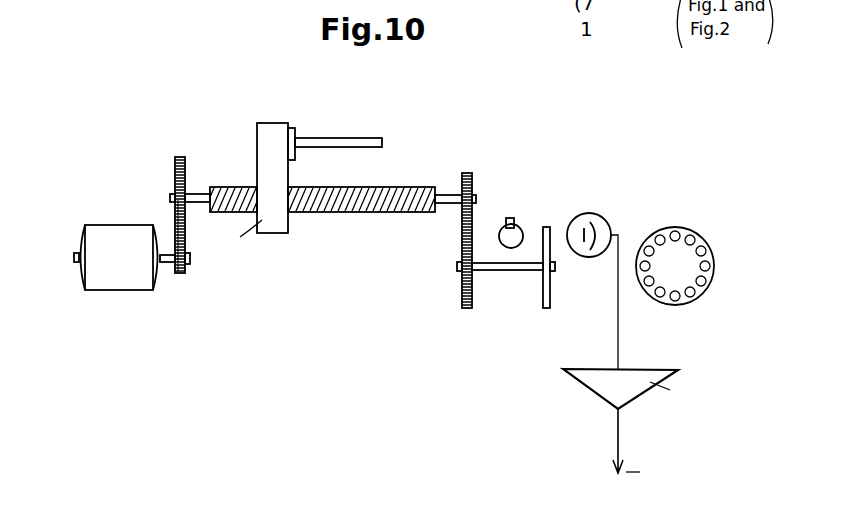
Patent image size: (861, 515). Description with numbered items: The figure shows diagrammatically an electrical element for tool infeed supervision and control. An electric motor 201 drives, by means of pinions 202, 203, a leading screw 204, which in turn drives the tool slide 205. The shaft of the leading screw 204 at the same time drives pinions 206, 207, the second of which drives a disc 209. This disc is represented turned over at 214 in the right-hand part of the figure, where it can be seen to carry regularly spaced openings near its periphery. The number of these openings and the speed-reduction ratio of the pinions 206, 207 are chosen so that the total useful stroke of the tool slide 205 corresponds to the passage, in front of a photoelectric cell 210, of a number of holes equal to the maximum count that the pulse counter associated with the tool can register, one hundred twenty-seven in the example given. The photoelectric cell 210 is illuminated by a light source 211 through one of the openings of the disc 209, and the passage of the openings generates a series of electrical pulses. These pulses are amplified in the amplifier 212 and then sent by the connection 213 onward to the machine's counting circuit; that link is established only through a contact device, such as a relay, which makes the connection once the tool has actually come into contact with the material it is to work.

The electric motor 201 is at (132, 242).
The pinion 202 is at (178, 273).
The pinion 203 is at (175, 160).
The leading screw 204 is at (233, 187).
The tool slide 205 is at (272, 135).
The pinion 206 is at (467, 173).
The pinion 207 is at (463, 308).
The disc 209 is at (545, 305).
The photoelectric cell 210 is at (593, 220).
The light source 211 is at (517, 225).
The amplifier 212 is at (588, 378).
The connection 213 is at (660, 444).
The disc (turned over view) 214 is at (682, 235).